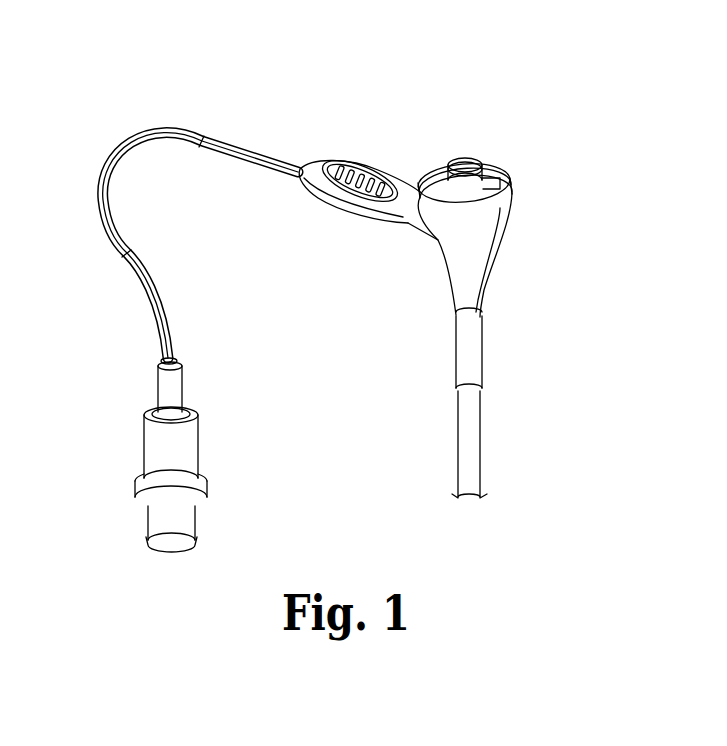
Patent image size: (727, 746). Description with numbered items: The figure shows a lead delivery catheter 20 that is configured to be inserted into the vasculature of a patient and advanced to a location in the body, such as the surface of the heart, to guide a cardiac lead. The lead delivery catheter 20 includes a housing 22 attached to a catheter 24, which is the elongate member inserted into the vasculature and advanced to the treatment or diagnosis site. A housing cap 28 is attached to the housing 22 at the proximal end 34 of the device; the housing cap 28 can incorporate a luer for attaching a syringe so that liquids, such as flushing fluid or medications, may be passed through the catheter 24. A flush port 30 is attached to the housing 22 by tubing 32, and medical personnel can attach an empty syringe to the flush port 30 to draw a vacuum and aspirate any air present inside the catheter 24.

The lead delivery catheter 20 is at (348, 280).
The housing 22 is at (468, 270).
The catheter 24 is at (468, 448).
The housing cap 28 is at (506, 168).
The flush port 30 is at (155, 443).
The tubing 32 is at (169, 133).
The proximal end 34 is at (414, 172).